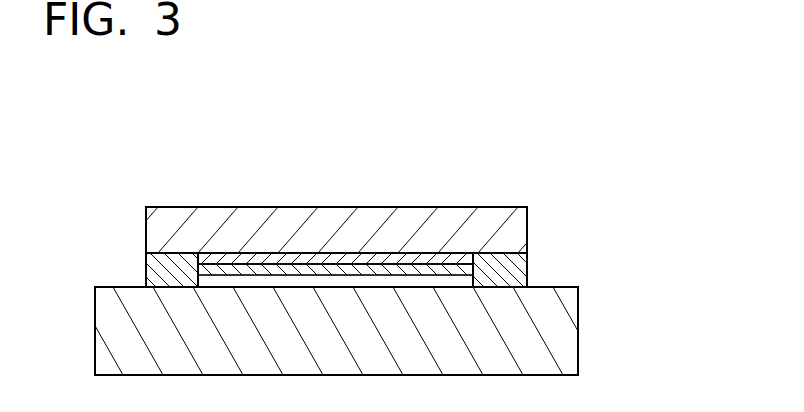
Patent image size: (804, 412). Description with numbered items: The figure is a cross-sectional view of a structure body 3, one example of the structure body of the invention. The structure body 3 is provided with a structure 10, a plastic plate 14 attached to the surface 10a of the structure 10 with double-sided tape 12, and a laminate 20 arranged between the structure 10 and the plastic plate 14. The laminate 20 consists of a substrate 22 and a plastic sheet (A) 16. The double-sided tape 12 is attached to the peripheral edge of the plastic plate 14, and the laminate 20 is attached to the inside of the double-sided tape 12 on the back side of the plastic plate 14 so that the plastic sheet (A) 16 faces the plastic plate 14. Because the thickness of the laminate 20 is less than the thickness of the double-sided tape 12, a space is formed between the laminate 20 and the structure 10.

The structure body 3 is at (474, 157).
The structure 10 is at (578, 332).
The surface 10a is at (560, 287).
The double-sided tape 12 is at (146, 270).
The plastic plate 14 is at (207, 208).
The plastic sheet (A) 16 is at (300, 263).
The laminate 20 is at (334, 189).
The substrate 22 is at (325, 272).